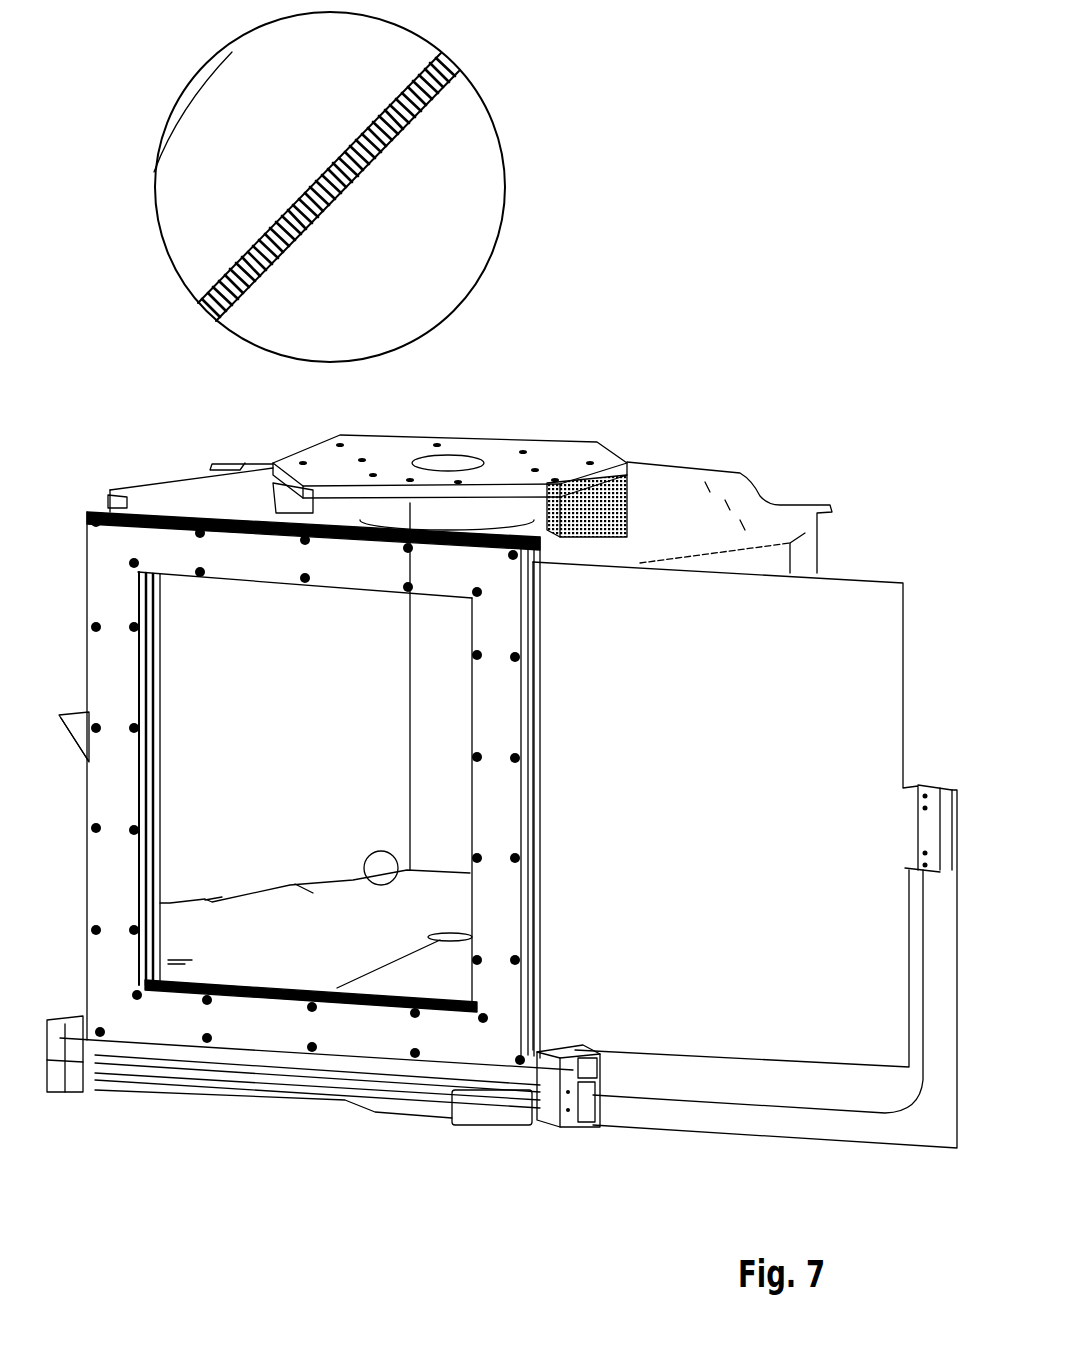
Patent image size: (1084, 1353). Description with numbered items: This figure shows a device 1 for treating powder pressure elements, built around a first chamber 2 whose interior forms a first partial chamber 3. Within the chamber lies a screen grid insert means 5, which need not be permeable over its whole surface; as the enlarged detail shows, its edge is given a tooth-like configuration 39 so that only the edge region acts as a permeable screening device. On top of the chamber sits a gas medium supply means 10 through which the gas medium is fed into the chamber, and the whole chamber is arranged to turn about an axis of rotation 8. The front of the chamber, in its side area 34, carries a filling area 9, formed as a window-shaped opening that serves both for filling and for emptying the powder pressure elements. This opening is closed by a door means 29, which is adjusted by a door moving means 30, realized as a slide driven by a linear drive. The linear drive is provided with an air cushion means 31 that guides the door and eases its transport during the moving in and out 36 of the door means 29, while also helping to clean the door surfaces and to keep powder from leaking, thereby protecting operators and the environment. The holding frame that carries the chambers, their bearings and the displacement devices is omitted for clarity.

The device for treating 1 is at (650, 371).
The first chamber 2 is at (727, 410).
The first partial chamber 3 is at (289, 729).
The screen grid insert means 5 is at (320, 951).
The axis of rotation 8 is at (397, 1155).
The filling area 9 is at (215, 643).
The gas medium supply means 10 is at (446, 450).
The door means 29 is at (741, 742).
The door moving means 30 is at (521, 1149).
The air cushion means 31 is at (172, 1002).
The side area 34 is at (288, 1115).
The moving in and out 36 is at (828, 992).
The tooth-like configuration 39 is at (381, 851).